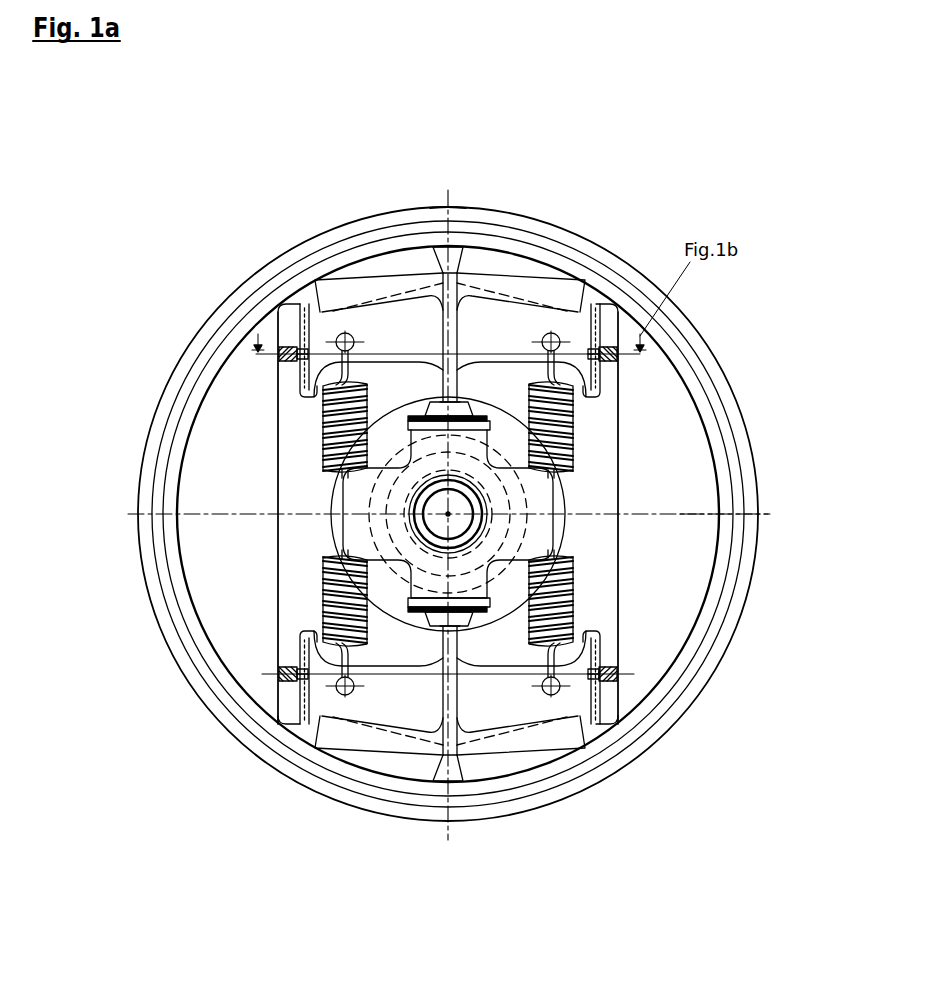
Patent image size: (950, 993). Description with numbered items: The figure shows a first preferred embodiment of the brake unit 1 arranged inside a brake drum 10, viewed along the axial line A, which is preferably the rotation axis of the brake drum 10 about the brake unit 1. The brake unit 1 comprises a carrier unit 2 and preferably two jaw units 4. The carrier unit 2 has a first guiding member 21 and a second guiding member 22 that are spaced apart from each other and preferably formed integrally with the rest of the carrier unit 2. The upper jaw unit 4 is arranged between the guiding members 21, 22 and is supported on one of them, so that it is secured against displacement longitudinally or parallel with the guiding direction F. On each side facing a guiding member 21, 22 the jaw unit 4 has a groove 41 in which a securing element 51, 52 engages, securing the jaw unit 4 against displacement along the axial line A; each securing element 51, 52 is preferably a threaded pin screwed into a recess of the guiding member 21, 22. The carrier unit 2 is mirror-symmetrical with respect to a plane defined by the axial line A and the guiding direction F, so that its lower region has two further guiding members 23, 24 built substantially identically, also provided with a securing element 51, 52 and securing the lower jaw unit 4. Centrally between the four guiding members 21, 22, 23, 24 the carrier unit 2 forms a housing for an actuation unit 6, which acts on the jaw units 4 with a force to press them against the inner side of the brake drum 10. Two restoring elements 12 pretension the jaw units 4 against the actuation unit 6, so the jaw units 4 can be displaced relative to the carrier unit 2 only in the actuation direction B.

The brake unit 1 is at (235, 440).
The carrier unit 2 is at (632, 445).
The jaw unit 4 is at (492, 300).
The groove 41 is at (590, 312).
The actuation unit 6 is at (437, 503).
The brake drum 10 is at (337, 240).
The restoring element 12 is at (597, 420).
The first guiding member 21 is at (607, 390).
The second guiding member 22 is at (288, 380).
The guiding member 23 is at (300, 700).
The guiding member 24 is at (598, 636).
The securing element 51 is at (600, 320).
The securing element 52 is at (283, 352).
The axial line A is at (452, 516).
The actuation direction B is at (447, 217).
The guiding direction F is at (688, 518).